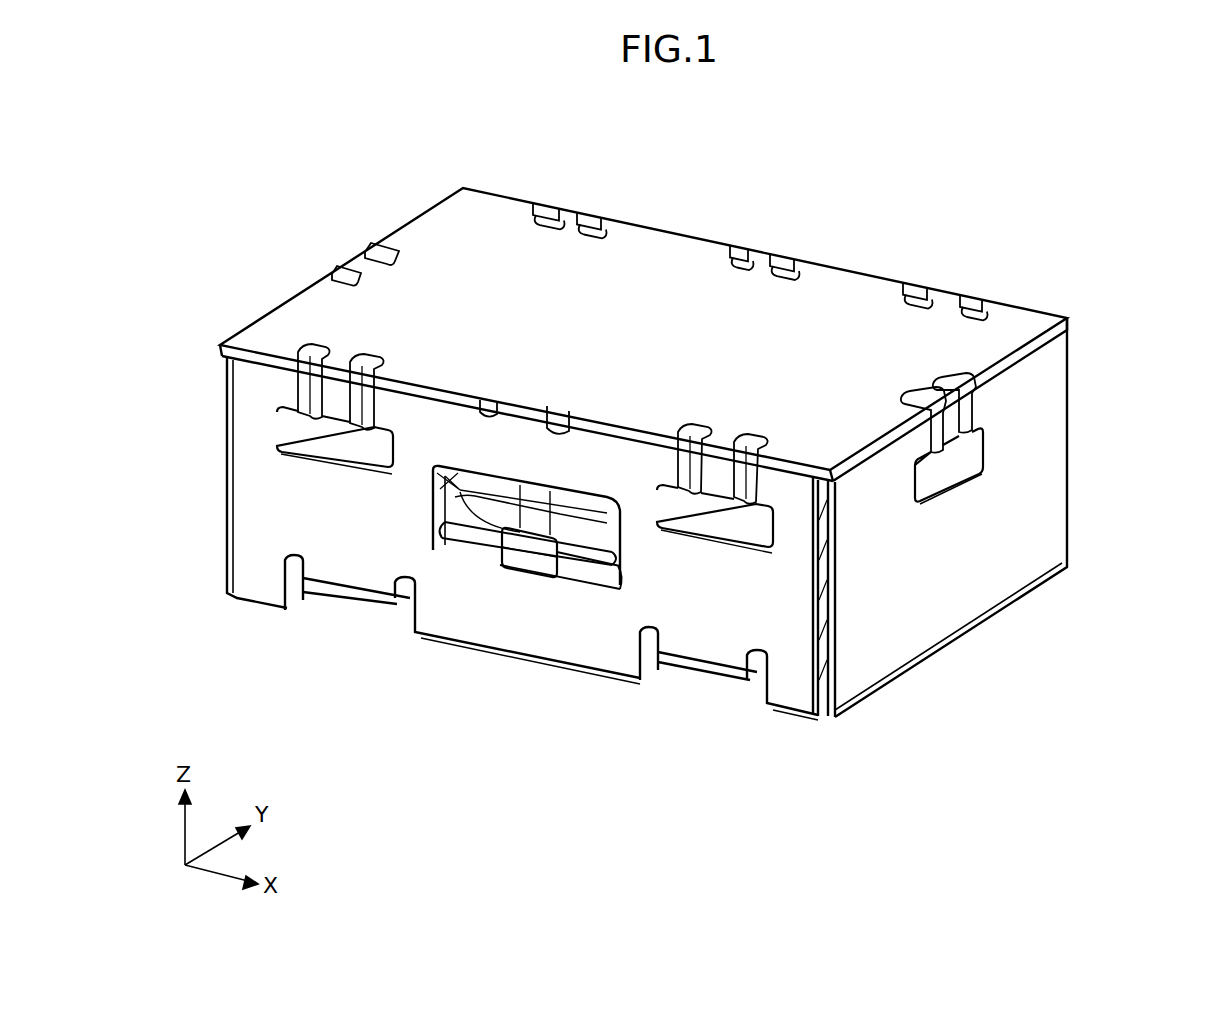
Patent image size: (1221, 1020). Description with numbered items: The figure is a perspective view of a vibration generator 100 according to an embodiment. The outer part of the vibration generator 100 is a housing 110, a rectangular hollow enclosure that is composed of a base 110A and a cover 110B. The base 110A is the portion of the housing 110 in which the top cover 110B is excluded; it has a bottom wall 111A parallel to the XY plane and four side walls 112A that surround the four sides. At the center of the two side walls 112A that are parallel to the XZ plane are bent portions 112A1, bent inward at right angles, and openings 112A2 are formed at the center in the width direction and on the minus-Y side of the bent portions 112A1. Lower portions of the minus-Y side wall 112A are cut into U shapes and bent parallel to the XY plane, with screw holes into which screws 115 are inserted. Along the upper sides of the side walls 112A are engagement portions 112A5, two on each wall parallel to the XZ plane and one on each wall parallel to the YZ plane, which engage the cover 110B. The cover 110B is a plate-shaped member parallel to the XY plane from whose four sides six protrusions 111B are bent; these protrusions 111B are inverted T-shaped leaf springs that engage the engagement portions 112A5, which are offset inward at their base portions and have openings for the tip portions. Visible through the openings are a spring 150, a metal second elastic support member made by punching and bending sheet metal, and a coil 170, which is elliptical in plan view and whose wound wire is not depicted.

The vibration generator 100 is at (298, 144).
The housing 110 is at (689, 434).
The base 110A is at (1036, 390).
The cover 110B is at (1000, 331).
The bottom wall 111A is at (655, 676).
The protrusions 111B is at (307, 432).
The side walls 112A is at (902, 627).
The bent portions 112A1 is at (481, 540).
The openings 112A2 is at (528, 566).
The engagement portions 112A5 is at (740, 490).
The screws 115 is at (718, 679).
The spring 150 is at (461, 514).
The coil 170 is at (578, 514).